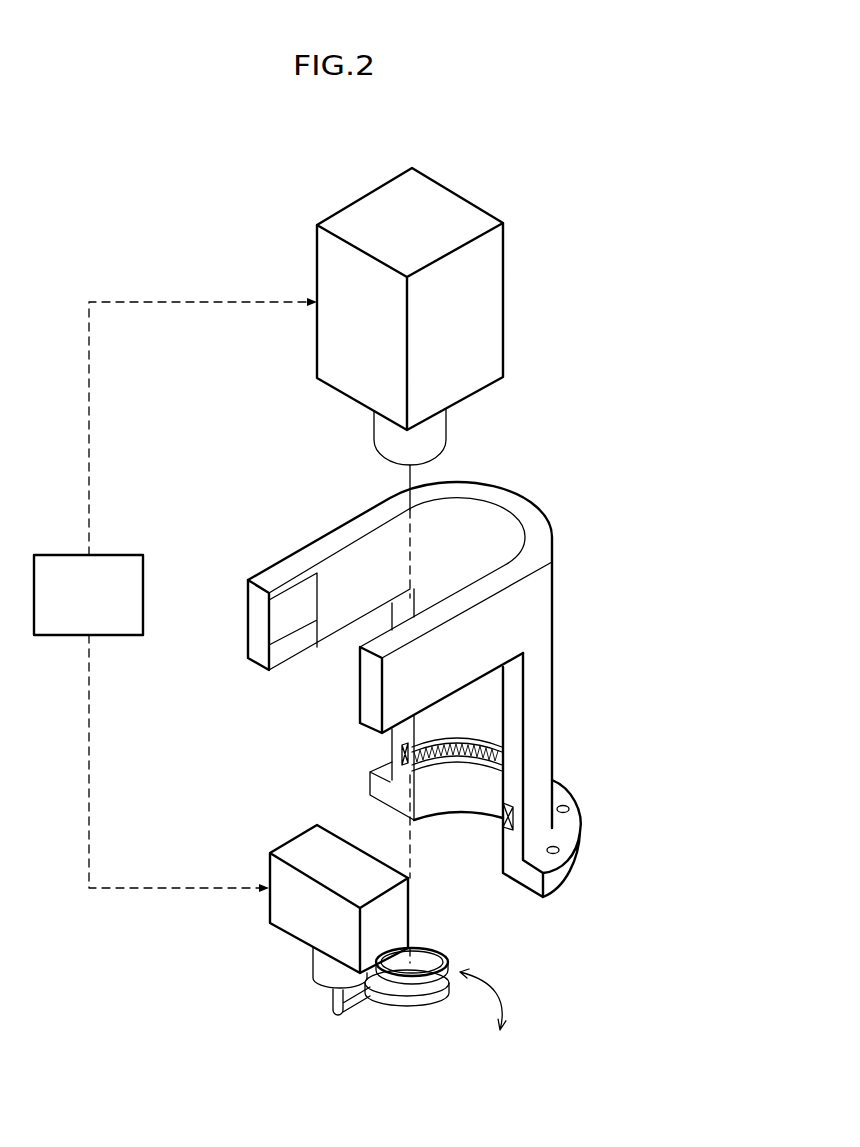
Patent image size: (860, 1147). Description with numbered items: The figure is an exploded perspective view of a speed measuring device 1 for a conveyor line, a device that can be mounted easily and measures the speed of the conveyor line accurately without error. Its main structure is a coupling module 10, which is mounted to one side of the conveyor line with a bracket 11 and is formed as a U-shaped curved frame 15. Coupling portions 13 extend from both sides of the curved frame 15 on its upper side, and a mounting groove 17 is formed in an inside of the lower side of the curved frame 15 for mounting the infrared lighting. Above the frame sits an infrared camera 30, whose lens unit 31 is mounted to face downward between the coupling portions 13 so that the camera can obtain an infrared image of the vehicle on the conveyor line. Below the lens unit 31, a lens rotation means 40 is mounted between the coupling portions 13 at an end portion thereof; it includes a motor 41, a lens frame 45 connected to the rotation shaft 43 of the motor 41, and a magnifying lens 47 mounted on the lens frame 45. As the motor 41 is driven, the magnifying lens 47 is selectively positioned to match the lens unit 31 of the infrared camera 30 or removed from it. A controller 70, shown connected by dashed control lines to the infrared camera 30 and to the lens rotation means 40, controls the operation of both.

The speed measuring device 1 is at (421, 139).
The coupling module 10 is at (537, 473).
The bracket 11 is at (567, 827).
The coupling portions 13 is at (258, 620).
The curved frame 15 is at (536, 521).
The mounting groove 17 is at (498, 824).
The infrared camera 30 is at (453, 215).
The lens unit 31 is at (433, 435).
The lens rotation means 40 is at (258, 850).
The motor 41 is at (305, 918).
The rotation shaft 43 is at (340, 1005).
The lens frame 45 is at (418, 1002).
The magnifying lens 47 is at (430, 963).
The controller 70 is at (145, 593).